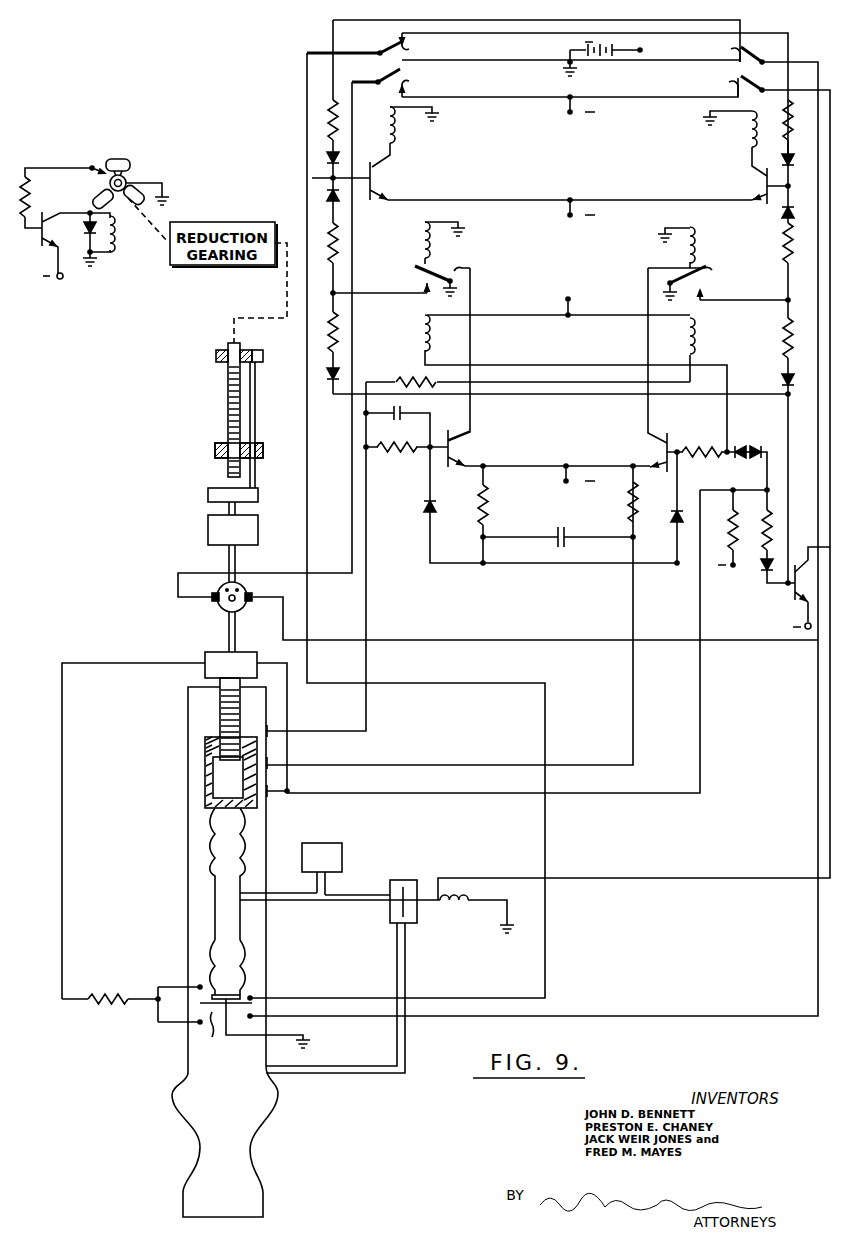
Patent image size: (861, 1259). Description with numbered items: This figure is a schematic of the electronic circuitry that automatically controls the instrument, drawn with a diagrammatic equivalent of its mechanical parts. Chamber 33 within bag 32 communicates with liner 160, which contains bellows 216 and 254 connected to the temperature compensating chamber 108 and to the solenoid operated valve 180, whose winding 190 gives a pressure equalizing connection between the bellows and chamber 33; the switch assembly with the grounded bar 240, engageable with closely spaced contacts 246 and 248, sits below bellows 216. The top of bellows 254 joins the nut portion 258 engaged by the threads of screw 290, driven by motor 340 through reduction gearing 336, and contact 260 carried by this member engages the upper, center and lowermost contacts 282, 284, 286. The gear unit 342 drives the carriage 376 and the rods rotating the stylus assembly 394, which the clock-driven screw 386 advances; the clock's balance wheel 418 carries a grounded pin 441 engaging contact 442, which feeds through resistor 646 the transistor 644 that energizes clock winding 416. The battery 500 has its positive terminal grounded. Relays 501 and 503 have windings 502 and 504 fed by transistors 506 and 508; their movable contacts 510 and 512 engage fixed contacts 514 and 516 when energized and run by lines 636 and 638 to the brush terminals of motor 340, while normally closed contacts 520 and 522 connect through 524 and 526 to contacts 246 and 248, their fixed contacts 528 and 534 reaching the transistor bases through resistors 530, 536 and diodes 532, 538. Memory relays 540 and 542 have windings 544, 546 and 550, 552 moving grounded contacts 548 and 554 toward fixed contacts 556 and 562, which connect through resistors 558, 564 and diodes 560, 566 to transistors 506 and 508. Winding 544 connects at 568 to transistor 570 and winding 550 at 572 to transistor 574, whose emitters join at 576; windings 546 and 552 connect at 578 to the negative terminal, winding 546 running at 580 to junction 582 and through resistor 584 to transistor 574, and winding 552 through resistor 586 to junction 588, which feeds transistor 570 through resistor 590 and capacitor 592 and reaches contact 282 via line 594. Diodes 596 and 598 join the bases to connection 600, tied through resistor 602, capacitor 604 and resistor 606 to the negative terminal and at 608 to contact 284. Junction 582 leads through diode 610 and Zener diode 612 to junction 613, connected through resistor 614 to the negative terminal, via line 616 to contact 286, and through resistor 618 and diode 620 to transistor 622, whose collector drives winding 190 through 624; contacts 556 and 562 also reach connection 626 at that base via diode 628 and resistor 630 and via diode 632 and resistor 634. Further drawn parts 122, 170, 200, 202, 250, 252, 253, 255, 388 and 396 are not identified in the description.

The bag 32 is at (264, 1193).
The chamber 33 is at (272, 1146).
The temperature compensating chamber 108 is at (336, 850).
The link 122 is at (326, 882).
The liner 160 is at (188, 893).
The tube 170 is at (279, 906).
The solenoid operated valve 180 is at (434, 925).
The winding of the solenoid valve 190 is at (448, 906).
The switch housing 200 is at (404, 882).
The plunger 202 is at (371, 904).
The bellows 216 is at (240, 964).
The movable contact member 240 is at (253, 1030).
The contact 246 is at (252, 997).
The contact 248 is at (252, 1017).
The contact 250 is at (197, 984).
The contact 252 is at (198, 1026).
The resistor 253 is at (116, 992).
The bellows 254 is at (212, 833).
The conductor 255 is at (50, 929).
The nut portion 258 is at (205, 744).
The movable contact 260 is at (289, 775).
The upper contact 282 is at (284, 728).
The center contact 284 is at (281, 765).
The lowermost contact 286 is at (276, 794).
The screw 290 is at (220, 694).
The reduction gearing 336 is at (212, 652).
The motor 340 is at (238, 584).
The gear unit 342 is at (210, 530).
The carriage 376 is at (210, 497).
The clock-driven screw 386 is at (228, 467).
The bearing 388 is at (214, 355).
The stylus assembly 394 is at (262, 448).
The nut 396 is at (215, 443).
The clock operating winding 416 is at (118, 239).
The balance wheel 418 is at (128, 165).
The grounded pin 441 is at (114, 165).
The contact 442 is at (95, 180).
The battery 500 is at (572, 48).
The relay 501 is at (424, 135).
The operating winding 502 is at (395, 137).
The relay 503 is at (700, 141).
The operating winding 504 is at (750, 149).
The transistor 506 is at (378, 178).
The transistor 508 is at (764, 187).
The movable contact 510 is at (385, 77).
The movable contact 512 is at (755, 82).
The fixed contact 514 is at (410, 77).
The fixed contact 516 is at (727, 90).
The normally closed movable contact 520 is at (410, 50).
The normally closed movable contact 522 is at (730, 54).
The connection 524 is at (308, 563).
The connection 526 is at (817, 690).
The fixed contact 528 is at (398, 46).
The resistor 530 is at (781, 128).
The diode 532 is at (770, 166).
The fixed contact 534 is at (745, 48).
The resistor 536 is at (328, 115).
The diode 538 is at (328, 160).
The relay 540 is at (416, 244).
The relay 542 is at (705, 231).
The winding 544 is at (418, 250).
The winding 546 is at (422, 330).
The movable contact 548 is at (472, 272).
The winding 550 is at (698, 242).
The winding 552 is at (702, 332).
The movable contact 554 is at (702, 266).
The fixed contact 556 is at (422, 282).
The resistor 558 is at (328, 200).
The diode 560 is at (380, 213).
The fixed contact 562 is at (742, 286).
The resistor 564 is at (782, 244).
The diode 566 is at (770, 261).
The connection 568 is at (472, 354).
The transistor 570 is at (466, 446).
The connection 572 is at (645, 344).
The transistor 574 is at (670, 437).
The connection 576 is at (531, 465).
The connection 578 is at (565, 300).
The connection 580 is at (718, 368).
The junction point 582 is at (705, 444).
The resistor 584 is at (698, 472).
The resistor 586 is at (408, 378).
The junction point 588 is at (366, 447).
The resistor 590 is at (407, 461).
The capacitor 592 is at (410, 408).
The line 594 is at (368, 563).
The diode 596 is at (432, 511).
The diode 598 is at (672, 528).
The connection 600 is at (572, 568).
The resistor 602 is at (490, 501).
The capacitor 604 is at (566, 534).
The resistor 606 is at (636, 484).
The connection 608 is at (632, 617).
The diode 610 is at (738, 446).
The Zener diode 612 is at (759, 434).
The junction 613 is at (743, 519).
The resistor 614 is at (748, 560).
The line 616 is at (700, 607).
The resistor 618 is at (775, 502).
The diode 620 is at (762, 590).
The transistor 622 is at (794, 609).
The connection 624 is at (810, 547).
The connection 626 is at (791, 465).
The diode 628 is at (344, 394).
The resistor 630 is at (310, 332).
The diode 632 is at (779, 380).
The resistor 634 is at (779, 336).
The line 636 is at (350, 497).
The line 638 is at (425, 640).
The transistor 644 is at (46, 244).
The resistor 646 is at (22, 182).